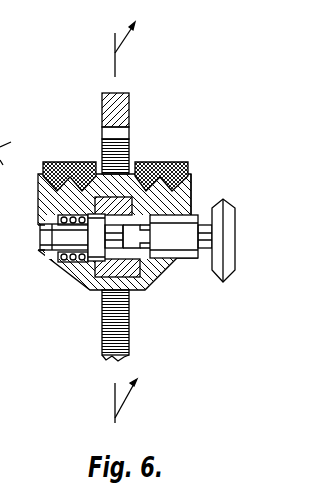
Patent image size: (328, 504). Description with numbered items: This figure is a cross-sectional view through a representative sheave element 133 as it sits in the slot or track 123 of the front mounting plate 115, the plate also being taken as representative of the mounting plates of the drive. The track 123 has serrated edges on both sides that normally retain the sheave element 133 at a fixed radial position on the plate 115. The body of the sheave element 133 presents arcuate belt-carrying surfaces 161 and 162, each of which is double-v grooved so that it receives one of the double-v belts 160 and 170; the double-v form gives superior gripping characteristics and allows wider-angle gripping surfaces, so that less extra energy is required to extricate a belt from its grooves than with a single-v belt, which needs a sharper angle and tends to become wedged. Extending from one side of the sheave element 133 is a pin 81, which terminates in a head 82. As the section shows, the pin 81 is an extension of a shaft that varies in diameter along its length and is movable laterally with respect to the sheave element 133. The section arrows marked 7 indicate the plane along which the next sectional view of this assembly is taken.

The section line 7- 7 is at (131, 215).
The front mounting plate 115 is at (128, 93).
The slot or track 123 is at (123, 137).
The double-v belt 160 is at (60, 162).
The double-v belt 170 is at (170, 162).
The arcuate belt-carrying surface 161 is at (37, 181).
The arcuate belt-carrying surface 162 is at (193, 178).
The pin 81 is at (208, 252).
The head 82 is at (232, 268).
The sheave element 133 is at (167, 266).